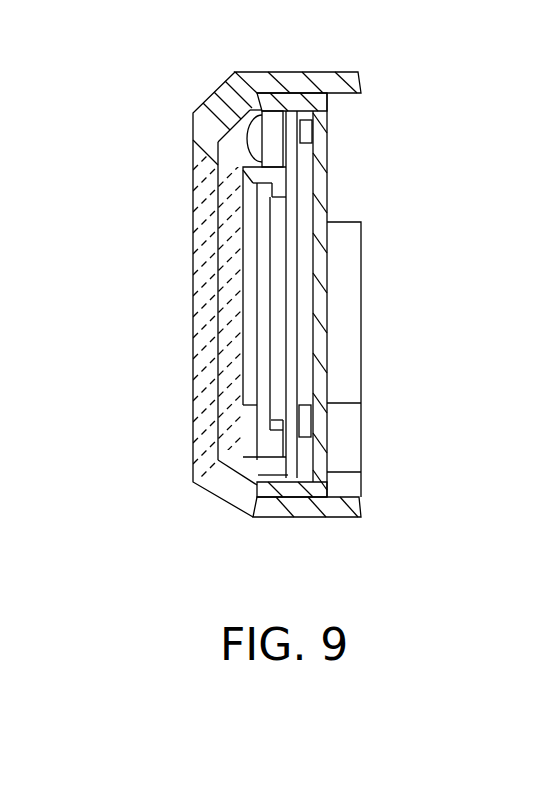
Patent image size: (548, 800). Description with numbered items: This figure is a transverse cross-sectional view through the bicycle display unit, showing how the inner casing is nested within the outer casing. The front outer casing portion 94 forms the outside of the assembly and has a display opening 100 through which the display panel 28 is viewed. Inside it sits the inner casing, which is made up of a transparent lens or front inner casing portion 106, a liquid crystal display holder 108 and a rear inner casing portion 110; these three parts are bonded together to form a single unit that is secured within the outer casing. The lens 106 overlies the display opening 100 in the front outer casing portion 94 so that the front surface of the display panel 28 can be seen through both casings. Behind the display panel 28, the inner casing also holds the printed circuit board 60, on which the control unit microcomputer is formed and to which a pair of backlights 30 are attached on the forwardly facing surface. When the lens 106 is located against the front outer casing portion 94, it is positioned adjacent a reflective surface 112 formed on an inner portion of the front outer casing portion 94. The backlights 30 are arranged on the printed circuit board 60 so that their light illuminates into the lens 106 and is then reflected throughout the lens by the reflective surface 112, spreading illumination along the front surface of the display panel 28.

The front outer casing portion 94 is at (261, 71).
The reflective surface 112 is at (223, 107).
The backlights 30 is at (222, 143).
The display opening 100 is at (207, 198).
The front inner casing portion 106 is at (225, 386).
The display panel 28 is at (205, 326).
The liquid crystal display holder 108 is at (282, 180).
The printed circuit board 60 is at (330, 424).
The rear inner casing portion 110 is at (330, 475).